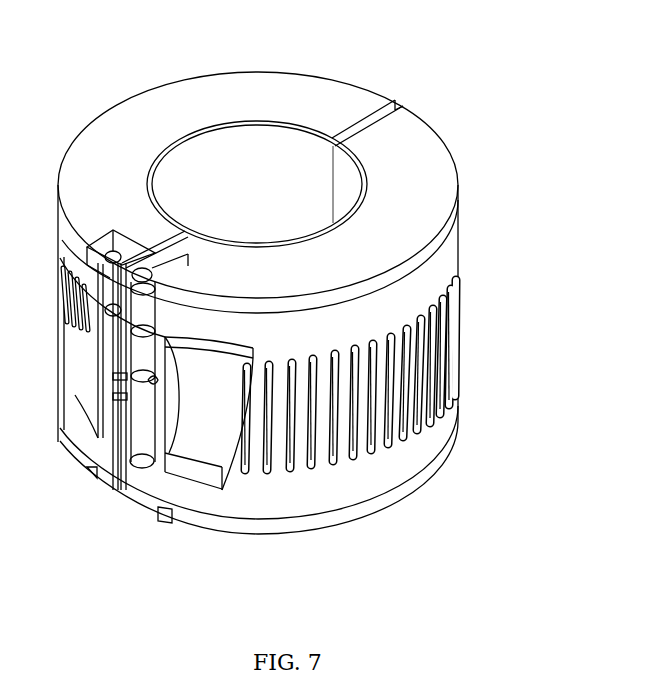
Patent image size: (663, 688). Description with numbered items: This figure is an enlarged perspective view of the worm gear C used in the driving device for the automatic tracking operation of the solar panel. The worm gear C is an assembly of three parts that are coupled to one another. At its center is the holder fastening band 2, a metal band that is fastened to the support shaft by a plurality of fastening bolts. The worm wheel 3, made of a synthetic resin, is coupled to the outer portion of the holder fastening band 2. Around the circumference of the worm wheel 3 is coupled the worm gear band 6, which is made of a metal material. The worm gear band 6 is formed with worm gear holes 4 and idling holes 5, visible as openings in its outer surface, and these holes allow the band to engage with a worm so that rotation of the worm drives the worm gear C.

The holder fastening band 2 is at (212, 152).
The worm wheel 3 is at (357, 102).
The worm gear holes 4 is at (377, 430).
The idling holes 5 is at (207, 442).
The worm gear band 6 is at (338, 493).
The worm gear C is at (492, 144).